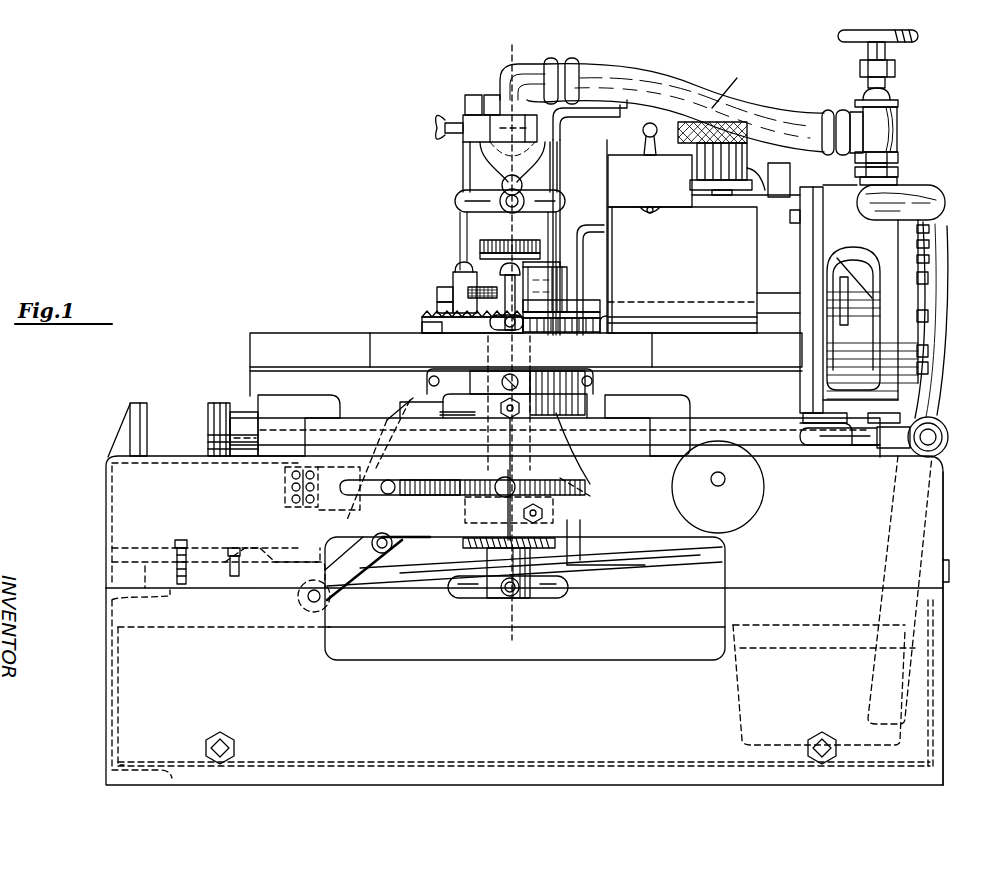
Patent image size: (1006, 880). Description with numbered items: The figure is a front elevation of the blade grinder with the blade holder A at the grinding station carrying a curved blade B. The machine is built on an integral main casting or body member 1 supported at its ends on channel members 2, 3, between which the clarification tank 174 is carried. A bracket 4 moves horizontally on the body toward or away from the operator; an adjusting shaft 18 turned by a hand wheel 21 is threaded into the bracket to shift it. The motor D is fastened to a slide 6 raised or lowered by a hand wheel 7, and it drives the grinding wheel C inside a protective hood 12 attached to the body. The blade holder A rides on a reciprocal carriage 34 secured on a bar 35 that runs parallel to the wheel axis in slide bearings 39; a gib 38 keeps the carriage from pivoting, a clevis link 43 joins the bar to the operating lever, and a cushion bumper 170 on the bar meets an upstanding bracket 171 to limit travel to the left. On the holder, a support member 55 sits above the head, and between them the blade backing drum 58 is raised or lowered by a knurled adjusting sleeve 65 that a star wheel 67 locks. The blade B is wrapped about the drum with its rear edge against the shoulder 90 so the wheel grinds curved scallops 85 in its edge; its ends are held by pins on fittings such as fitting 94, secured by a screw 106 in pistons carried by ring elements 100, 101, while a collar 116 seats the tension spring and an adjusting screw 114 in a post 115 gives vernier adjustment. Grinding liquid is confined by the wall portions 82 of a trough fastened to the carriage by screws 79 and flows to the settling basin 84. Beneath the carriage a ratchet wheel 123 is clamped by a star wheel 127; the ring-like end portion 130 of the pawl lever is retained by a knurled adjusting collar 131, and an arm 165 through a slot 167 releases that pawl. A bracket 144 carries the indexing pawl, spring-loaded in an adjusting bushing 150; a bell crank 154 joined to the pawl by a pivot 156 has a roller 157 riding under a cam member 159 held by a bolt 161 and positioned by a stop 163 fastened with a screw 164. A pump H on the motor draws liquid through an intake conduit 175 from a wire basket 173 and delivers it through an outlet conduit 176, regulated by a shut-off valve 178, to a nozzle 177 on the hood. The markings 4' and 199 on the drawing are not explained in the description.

The main casting or body member 1 is at (816, 540).
The channel member 2 is at (106, 660).
The channel member 3 is at (943, 693).
The bracket 4 is at (706, 326).
The roller 4' is at (946, 437).
The slide 6 is at (520, 42).
The hand wheel 7 is at (724, 89).
The protective hood 12 is at (548, 136).
The adjusting shaft 18 is at (716, 486).
The hand wheel 21 is at (758, 485).
The reciprocal carriage 34 is at (554, 438).
The bar 35 is at (730, 420).
The gib 38 is at (623, 431).
The slide bearings 39 is at (302, 410).
The clevis link 43 is at (865, 448).
The support member 55 is at (600, 318).
The blade backing member or drum 58 is at (594, 330).
The rotatable adjusting sleeve 65 is at (480, 245).
The star wheel 67 is at (455, 196).
The screws 79 is at (590, 384).
The wall portions 82 is at (322, 352).
The settling basin 84 is at (680, 556).
The scallops or serrations 85 is at (422, 318).
The shoulder or top surface 90 is at (585, 332).
The adjustable fitting 94 is at (538, 328).
The ring element 100 is at (560, 280).
The ring element 101 is at (560, 300).
The screw 106 is at (545, 262).
The adjusting screw 114 is at (487, 297).
The post 115 is at (453, 284).
The collar 116 is at (455, 262).
The rack member or ratchet wheel 123 is at (596, 498).
The star wheel 127 is at (480, 595).
The ring-like end portion 130 is at (462, 518).
The knurled adjusting collar 131 is at (463, 546).
The bracket 144 is at (382, 416).
The adjusting bushing 150 is at (285, 505).
The bell crank 154 is at (350, 578).
The pivot 156 is at (388, 480).
The roller 157 is at (326, 598).
The cam member 159 is at (272, 562).
The bolt 161 is at (175, 542).
The stop 163 is at (222, 548).
The screw 164 is at (238, 548).
The arm 165 is at (515, 486).
The slot 167 is at (478, 485).
The cushion bumper 170 is at (211, 404).
The upwardly extending bracket 171 is at (148, 407).
The wire basket 173 is at (740, 692).
The clarification tank 174 is at (598, 764).
The intake conduit 175 is at (936, 400).
The outlet conduit 176 is at (668, 95).
The nozzle 177 is at (538, 160).
The shut-off valve 178 is at (896, 122).
The rod 199 is at (515, 280).
The blade holder A is at (450, 270).
The blade B is at (420, 325).
The grinding wheel C is at (478, 150).
The motor D is at (704, 227).
The pump H is at (898, 285).